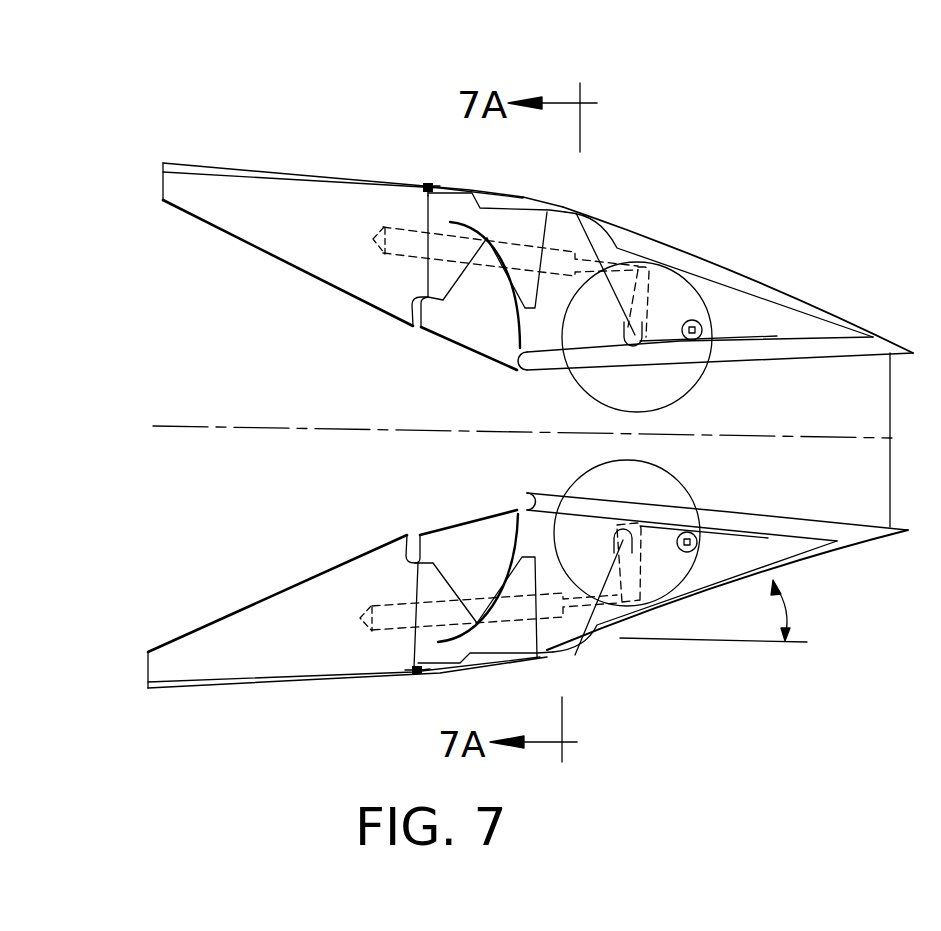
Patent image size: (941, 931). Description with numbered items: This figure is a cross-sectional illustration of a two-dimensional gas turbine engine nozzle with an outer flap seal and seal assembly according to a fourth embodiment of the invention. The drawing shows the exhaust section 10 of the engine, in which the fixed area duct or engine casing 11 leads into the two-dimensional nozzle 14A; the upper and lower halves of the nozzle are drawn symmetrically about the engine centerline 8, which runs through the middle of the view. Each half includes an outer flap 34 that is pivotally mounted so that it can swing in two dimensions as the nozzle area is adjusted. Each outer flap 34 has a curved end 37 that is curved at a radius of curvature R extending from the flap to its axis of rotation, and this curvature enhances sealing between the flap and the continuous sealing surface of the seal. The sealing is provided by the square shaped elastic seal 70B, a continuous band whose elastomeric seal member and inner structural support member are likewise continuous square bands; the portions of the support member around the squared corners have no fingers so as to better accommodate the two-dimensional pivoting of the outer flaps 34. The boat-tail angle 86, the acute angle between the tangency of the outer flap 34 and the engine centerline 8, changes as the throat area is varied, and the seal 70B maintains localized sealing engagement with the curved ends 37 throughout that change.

The engine centerline 8 is at (358, 428).
The exhaust section 10 is at (297, 734).
The engine casing 11 is at (253, 168).
The 2D nozzle 14A is at (596, 168).
The outer flaps 34 is at (723, 268).
The curved end 37 is at (585, 212).
The square shaped elastic seal 70B is at (525, 198).
The boat-tail angle 86 is at (787, 610).
The radius of curvature R is at (600, 248).